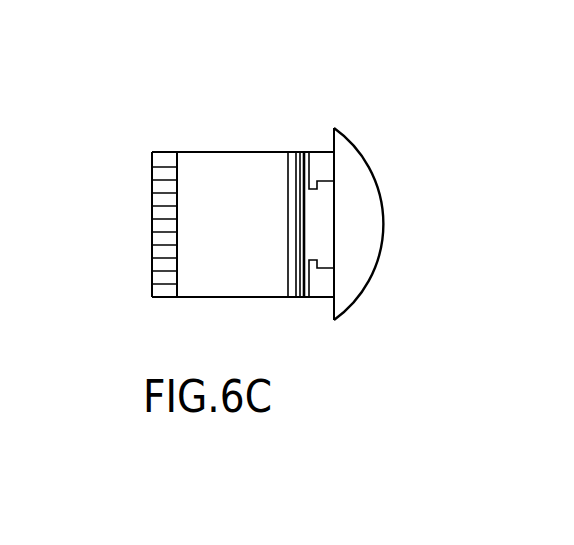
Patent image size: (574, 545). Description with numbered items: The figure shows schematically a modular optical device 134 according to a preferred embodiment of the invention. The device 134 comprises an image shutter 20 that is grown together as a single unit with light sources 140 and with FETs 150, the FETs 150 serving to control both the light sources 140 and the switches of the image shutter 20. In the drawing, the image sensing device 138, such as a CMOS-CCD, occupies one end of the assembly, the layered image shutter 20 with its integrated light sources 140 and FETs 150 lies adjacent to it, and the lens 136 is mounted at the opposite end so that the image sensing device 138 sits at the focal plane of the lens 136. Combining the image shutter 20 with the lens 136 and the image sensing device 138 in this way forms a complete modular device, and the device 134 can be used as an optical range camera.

The device 134 is at (298, 78).
The lens 136 is at (372, 228).
The image sensing device 138 is at (163, 158).
The light sources 140 is at (325, 172).
The FETs 150 is at (315, 288).
The image shutter 20 is at (297, 297).